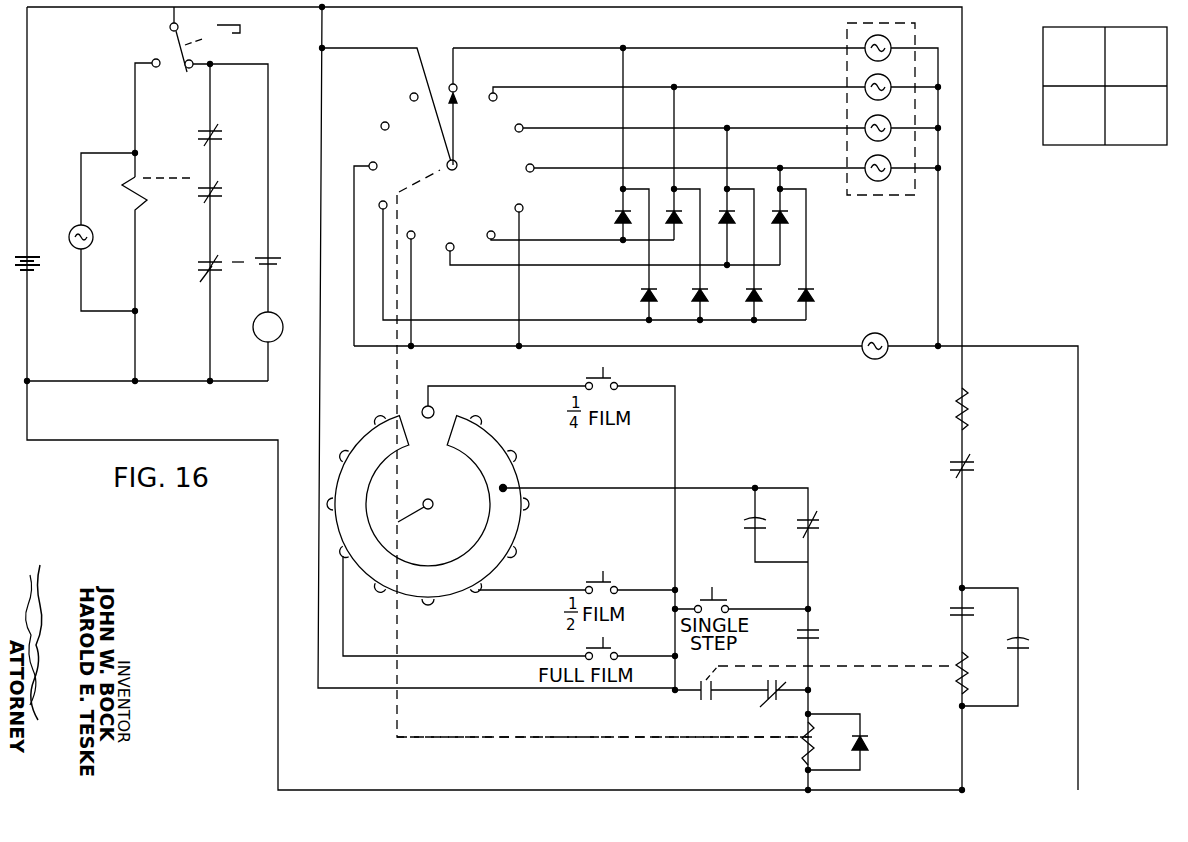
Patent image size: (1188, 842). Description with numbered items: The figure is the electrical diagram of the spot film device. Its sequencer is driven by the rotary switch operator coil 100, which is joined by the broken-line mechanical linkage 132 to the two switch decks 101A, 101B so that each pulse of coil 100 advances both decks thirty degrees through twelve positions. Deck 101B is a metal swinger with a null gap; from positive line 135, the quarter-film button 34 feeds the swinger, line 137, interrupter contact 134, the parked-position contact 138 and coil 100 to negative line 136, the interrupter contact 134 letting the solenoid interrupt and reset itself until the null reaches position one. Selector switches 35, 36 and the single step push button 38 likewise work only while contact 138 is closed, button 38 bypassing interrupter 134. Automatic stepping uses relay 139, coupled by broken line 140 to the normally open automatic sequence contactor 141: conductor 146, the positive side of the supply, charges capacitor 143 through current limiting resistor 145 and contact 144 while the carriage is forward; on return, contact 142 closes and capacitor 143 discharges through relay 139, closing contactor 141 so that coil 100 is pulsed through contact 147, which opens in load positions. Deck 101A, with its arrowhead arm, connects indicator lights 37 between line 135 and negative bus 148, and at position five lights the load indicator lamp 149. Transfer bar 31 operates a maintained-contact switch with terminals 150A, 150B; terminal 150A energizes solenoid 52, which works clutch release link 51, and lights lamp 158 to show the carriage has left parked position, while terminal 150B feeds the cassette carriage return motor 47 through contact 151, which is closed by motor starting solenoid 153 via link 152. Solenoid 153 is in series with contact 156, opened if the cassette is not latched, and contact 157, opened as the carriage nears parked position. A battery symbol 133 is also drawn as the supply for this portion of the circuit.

The transfer bar 31 is at (243, 30).
The switch terminal 150A is at (130, 108).
The switch terminal 150B is at (226, 175).
The contact 156 is at (223, 134).
The contact 157 is at (223, 191).
The clutch release link 51 is at (165, 176).
The solenoid 52 is at (148, 202).
The lamp 158 is at (72, 226).
The battery 133 is at (36, 270).
The motor starting solenoid 153 is at (196, 262).
The link 152 is at (238, 260).
The contact 151 is at (282, 263).
The cassette carriage return motor 47 is at (279, 340).
The switch deck 101A is at (384, 91).
The switch deck 101B is at (378, 415).
The negative bus 148 is at (938, 236).
The indicator lights 37 is at (876, 197).
The load indicator lamp 149 is at (871, 341).
The quarter-film push button 34 is at (603, 368).
The selector switch 35 is at (603, 573).
The selector switch 36 is at (603, 640).
The single step push button 38 is at (714, 590).
The line 137 is at (694, 492).
The interrupter contact 134 is at (822, 516).
The contact 138 is at (822, 636).
The mechanical coupling 140 is at (796, 664).
The automatic sequence contactor 141 is at (696, 680).
The contact 147 is at (776, 707).
The rotary switch operator coil 100 is at (806, 763).
The mechanical linkage 132 is at (696, 740).
The positive line 135 is at (319, 672).
The negative line 136 is at (579, 786).
The conductor 146 is at (965, 369).
The current limiting resistor 145 is at (967, 407).
The contact 144 is at (976, 462).
The contact 142 is at (975, 612).
The capacitor 143 is at (1030, 644).
The relay 139 is at (962, 683).